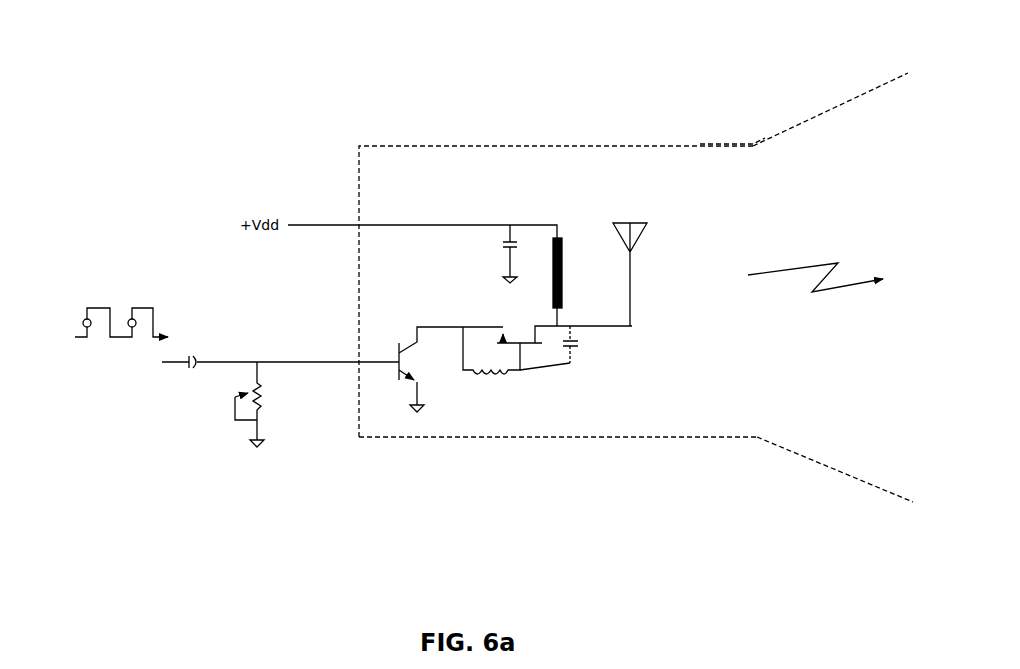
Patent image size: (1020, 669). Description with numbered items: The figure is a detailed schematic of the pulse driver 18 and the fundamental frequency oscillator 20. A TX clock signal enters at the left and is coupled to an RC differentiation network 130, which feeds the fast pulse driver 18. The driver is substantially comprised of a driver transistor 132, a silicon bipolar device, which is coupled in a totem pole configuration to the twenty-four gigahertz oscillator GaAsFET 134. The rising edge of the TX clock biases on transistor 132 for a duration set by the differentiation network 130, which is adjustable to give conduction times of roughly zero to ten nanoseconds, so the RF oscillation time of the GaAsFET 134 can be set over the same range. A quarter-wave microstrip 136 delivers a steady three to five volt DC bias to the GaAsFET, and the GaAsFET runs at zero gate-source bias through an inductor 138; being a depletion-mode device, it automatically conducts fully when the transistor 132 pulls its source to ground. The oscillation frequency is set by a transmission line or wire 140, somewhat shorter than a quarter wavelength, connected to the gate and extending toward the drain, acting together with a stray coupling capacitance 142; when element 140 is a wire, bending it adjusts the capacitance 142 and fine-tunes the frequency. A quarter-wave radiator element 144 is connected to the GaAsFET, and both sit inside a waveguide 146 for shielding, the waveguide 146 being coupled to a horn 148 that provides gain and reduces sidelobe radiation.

The pulse driver 18 is at (381, 460).
The fundamental frequency oscillator 20 is at (628, 521).
The RC differentiation network 130 is at (189, 418).
The driver transistor 132 is at (425, 387).
The GaAsFET 134 is at (503, 321).
The quarter-wave microstrip 136 is at (563, 248).
The inductor 138 is at (493, 383).
The transmission line 140 is at (547, 378).
The stray coupling capacitance 142 is at (588, 350).
The quarter-wave radiator element 144 is at (628, 213).
The waveguide 146 is at (707, 143).
The horn 148 is at (845, 95).